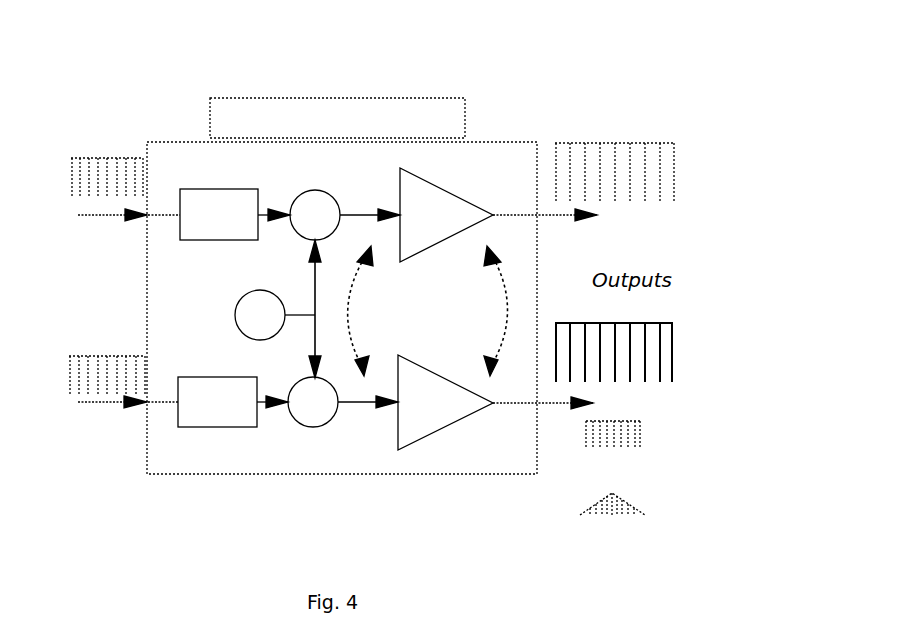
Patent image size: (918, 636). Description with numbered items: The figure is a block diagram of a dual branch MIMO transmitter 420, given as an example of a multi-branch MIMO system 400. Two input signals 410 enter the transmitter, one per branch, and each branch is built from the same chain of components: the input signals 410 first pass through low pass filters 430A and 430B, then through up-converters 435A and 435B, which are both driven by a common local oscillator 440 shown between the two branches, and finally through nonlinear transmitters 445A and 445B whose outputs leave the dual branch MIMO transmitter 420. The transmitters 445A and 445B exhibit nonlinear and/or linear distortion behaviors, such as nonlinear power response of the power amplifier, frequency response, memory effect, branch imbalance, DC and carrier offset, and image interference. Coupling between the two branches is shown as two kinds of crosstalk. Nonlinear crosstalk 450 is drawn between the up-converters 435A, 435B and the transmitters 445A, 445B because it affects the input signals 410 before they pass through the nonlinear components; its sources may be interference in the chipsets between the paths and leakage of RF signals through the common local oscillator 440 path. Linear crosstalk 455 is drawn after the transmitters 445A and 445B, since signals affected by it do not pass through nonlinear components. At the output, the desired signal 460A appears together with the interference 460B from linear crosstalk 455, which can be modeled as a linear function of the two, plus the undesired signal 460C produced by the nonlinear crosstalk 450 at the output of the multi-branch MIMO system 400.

The multi-branch MIMO system 400 is at (327, 67).
The input signals 410 is at (100, 420).
The dual branch MIMO transmitter 420 is at (340, 475).
The low pass filter 430A is at (187, 189).
The low pass filter 430B is at (222, 427).
The up-converter 435A is at (310, 190).
The up-converter 435B is at (325, 427).
The local oscillator 440 is at (240, 298).
The nonlinear transmitter 445A is at (447, 180).
The nonlinear transmitter 445B is at (437, 437).
The nonlinear crosstalk 450 is at (373, 311).
The linear crosstalk 455 is at (480, 311).
The desired signal 460A is at (690, 325).
The interference 460B is at (652, 418).
The undesired signal 460C is at (637, 520).